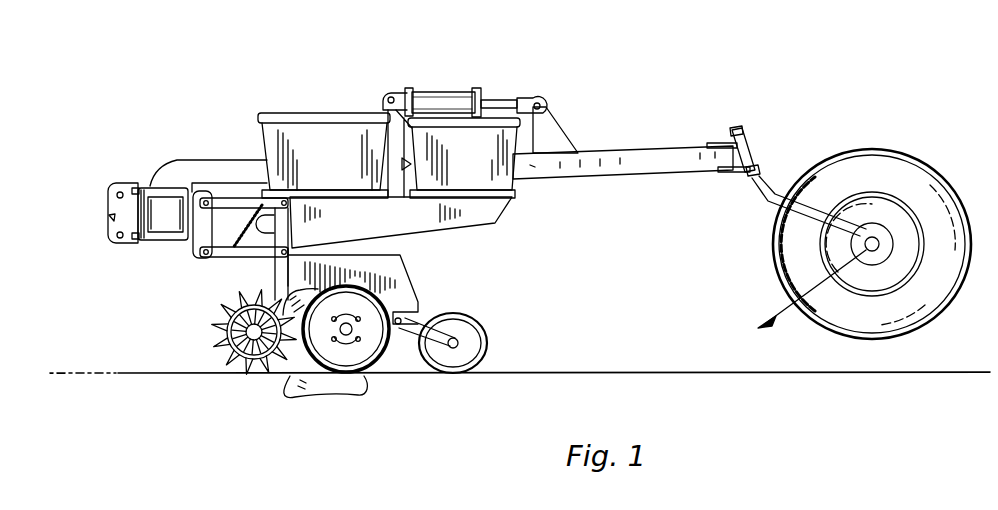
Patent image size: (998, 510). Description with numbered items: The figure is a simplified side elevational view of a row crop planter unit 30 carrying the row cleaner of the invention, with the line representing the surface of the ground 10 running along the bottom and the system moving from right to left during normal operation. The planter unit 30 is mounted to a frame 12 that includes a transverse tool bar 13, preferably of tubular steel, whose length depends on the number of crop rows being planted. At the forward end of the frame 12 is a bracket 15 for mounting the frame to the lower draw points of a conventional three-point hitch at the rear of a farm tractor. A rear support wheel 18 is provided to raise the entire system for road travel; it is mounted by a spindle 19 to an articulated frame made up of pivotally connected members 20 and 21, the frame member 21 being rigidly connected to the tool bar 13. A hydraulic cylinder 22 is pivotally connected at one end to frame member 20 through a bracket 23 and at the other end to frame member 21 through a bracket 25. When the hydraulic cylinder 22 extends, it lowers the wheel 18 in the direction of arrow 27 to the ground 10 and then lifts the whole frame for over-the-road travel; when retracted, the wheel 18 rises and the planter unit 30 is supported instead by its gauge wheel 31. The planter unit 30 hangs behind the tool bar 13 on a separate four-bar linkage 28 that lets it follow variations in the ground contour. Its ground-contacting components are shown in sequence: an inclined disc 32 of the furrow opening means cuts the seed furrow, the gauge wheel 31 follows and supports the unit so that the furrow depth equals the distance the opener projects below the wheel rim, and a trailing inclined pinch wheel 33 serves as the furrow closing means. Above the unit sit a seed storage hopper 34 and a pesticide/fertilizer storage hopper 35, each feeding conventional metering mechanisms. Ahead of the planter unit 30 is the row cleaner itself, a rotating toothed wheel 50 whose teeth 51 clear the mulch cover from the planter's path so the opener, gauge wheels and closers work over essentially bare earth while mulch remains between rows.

The surface of the ground 10 is at (690, 372).
The frame 12 is at (152, 192).
The transverse tool bar 13 is at (172, 207).
The bracket 15 is at (105, 217).
The rear support wheel 18 is at (882, 152).
The spindle 19 is at (746, 150).
The frame member 20 is at (667, 147).
The frame member 21 is at (395, 168).
The hydraulic cylinder 22 is at (447, 103).
The bracket 23 is at (547, 133).
The bracket 25 is at (383, 92).
The arrow 27 is at (782, 324).
The four-bar linkage 28 is at (240, 245).
The planter unit 30 is at (509, 216).
The gauge wheel 31 is at (365, 377).
The inclined disc 32 is at (293, 378).
The inclined pinch wheel 33 is at (480, 322).
The seed storage hopper 34 is at (330, 140).
The pesticide/fertilizer storage hopper 35 is at (497, 120).
The rotating toothed wheel 50 is at (227, 321).
The spikes 51 is at (225, 302).